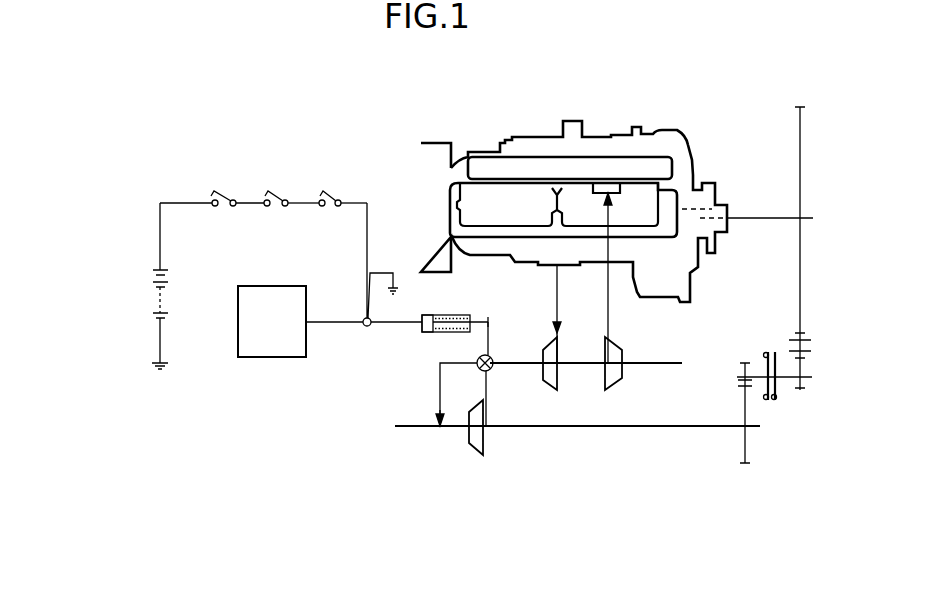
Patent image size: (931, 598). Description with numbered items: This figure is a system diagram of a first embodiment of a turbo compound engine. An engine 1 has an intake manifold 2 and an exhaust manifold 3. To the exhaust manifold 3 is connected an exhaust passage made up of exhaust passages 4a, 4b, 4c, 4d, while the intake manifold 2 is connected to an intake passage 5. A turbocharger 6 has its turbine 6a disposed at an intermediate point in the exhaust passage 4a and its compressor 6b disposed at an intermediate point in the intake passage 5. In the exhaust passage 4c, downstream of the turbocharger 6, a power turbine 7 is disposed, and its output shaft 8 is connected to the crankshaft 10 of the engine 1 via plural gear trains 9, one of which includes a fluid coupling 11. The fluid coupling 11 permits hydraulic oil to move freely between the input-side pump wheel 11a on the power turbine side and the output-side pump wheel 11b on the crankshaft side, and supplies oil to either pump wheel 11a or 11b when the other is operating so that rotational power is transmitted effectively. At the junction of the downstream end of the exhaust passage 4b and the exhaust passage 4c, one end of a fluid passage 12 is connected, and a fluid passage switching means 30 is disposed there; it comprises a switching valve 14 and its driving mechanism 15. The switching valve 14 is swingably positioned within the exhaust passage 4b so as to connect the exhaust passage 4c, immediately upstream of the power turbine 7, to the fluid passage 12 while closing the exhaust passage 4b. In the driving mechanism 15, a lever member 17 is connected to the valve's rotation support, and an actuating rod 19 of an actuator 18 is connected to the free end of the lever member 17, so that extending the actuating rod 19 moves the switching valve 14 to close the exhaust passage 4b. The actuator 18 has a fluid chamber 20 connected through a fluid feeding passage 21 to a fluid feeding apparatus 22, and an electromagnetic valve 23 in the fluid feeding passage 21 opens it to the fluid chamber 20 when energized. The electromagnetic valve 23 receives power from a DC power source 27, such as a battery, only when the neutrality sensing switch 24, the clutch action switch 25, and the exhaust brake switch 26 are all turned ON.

The engine 1 is at (533, 130).
The intake manifold 2 is at (610, 186).
The exhaust manifold 3 is at (550, 253).
The exhaust passage 4a is at (558, 312).
The exhaust passage 4b is at (528, 368).
The exhaust passage 4c is at (483, 390).
The exhaust passage 4d is at (428, 430).
The intake passage 5 is at (610, 318).
The turbocharger 6 is at (580, 378).
The turbine 6a is at (543, 352).
The compressor 6b is at (618, 378).
The power turbine 7 is at (483, 443).
The output shaft 8 is at (610, 432).
The gear trains 9 is at (742, 345).
The crankshaft 10 is at (762, 212).
The fluid coupling 11 is at (780, 385).
The pump wheel 11a is at (766, 352).
The pump wheel 11b is at (776, 403).
The fluid passage 12 is at (437, 386).
The switching valve 14 is at (492, 373).
The driving mechanism 15 is at (373, 360).
The lever member 17 is at (492, 360).
The actuator 18 is at (470, 316).
The actuating rod 19 is at (420, 340).
The fluid chamber 20 is at (431, 315).
The fluid feeding passage 21 is at (337, 320).
The fluid feeding apparatus 22 is at (272, 321).
The electromagnetic valve 23 is at (363, 328).
The neutrality sensing switch 24 is at (345, 184).
The clutch action switch 25 is at (291, 184).
The exhaust brake switch 26 is at (212, 184).
The DC power source 27 is at (168, 302).
The fluid passage switching means 30 is at (477, 361).